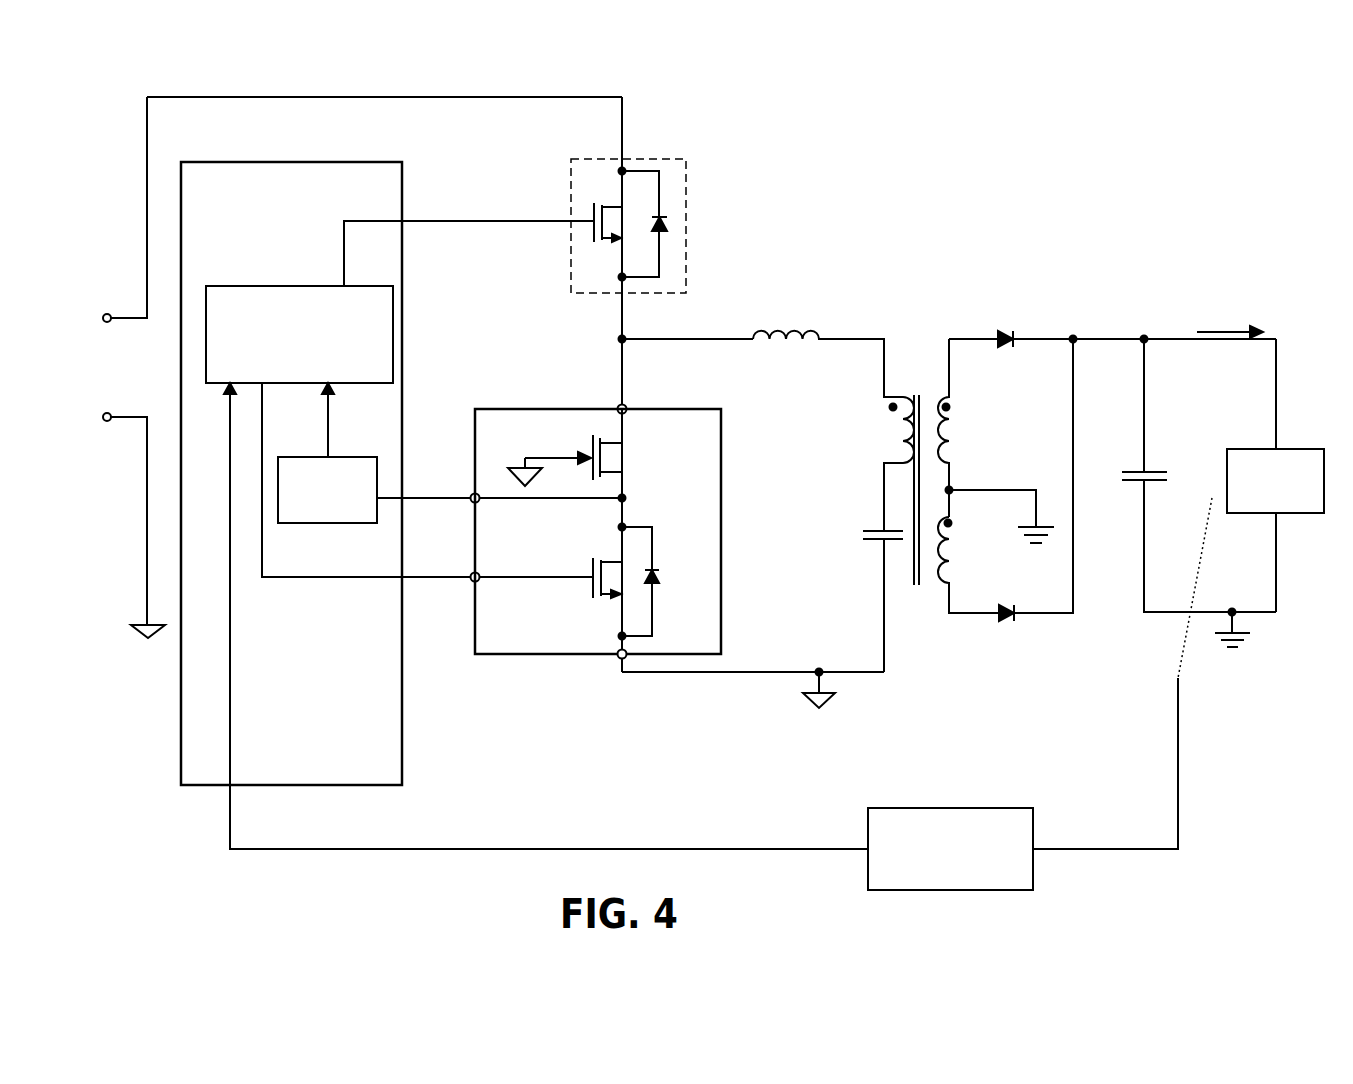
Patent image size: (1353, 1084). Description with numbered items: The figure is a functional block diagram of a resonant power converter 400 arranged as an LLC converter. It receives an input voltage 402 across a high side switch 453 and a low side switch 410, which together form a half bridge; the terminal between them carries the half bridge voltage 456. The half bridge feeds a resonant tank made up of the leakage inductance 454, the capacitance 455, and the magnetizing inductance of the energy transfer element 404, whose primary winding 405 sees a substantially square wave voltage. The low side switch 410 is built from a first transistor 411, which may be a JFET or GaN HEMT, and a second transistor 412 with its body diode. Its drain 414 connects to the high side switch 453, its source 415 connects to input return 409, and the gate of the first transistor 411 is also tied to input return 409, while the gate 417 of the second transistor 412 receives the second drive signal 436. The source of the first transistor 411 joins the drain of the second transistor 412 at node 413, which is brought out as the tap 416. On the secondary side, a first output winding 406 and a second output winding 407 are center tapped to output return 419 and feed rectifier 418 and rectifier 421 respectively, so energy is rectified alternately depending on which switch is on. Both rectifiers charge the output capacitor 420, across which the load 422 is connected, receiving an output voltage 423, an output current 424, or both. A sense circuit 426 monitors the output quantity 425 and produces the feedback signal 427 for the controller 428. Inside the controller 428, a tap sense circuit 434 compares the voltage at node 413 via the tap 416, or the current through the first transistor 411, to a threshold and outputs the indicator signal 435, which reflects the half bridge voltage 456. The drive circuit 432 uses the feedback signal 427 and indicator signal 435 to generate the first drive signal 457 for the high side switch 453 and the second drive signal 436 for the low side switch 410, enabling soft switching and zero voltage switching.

The resonant power converter 400 is at (1230, 133).
The input voltage 402 is at (114, 366).
The energy transfer element 404 is at (913, 592).
The primary winding 405 is at (882, 440).
The first output winding 406 is at (947, 443).
The second output winding 407 is at (946, 558).
The input return 409 is at (145, 620).
The low side switch 410 is at (745, 496).
The first transistor 411 is at (655, 458).
The second transistor 412 is at (556, 553).
The node 413 is at (632, 500).
The drain 414 is at (612, 402).
The source 415 is at (622, 672).
The tap 416 is at (469, 496).
The gate 417 is at (485, 590).
The rectifier 418 is at (1029, 312).
The output return 419 is at (1052, 520).
The output capacitor 420 is at (1106, 492).
The rectifier 421 is at (1005, 625).
The load 422 is at (1284, 515).
The output voltage 423 is at (1184, 462).
The output current 424 is at (1224, 303).
The output quantity 425 is at (1107, 860).
The sense circuit 426 is at (1014, 806).
The feedback signal 427 is at (680, 820).
The controller 428 is at (166, 730).
The drive circuit 432 is at (279, 279).
The tap sense circuit 434 is at (316, 528).
The indicator signal 435 is at (330, 430).
The second drive signal 436 is at (440, 586).
The high side switch 453 is at (718, 224).
The leakage inductance 454 is at (799, 312).
The capacitance 455 is at (855, 522).
The half bridge voltage 456 is at (559, 331).
The first drive signal 457 is at (488, 190).